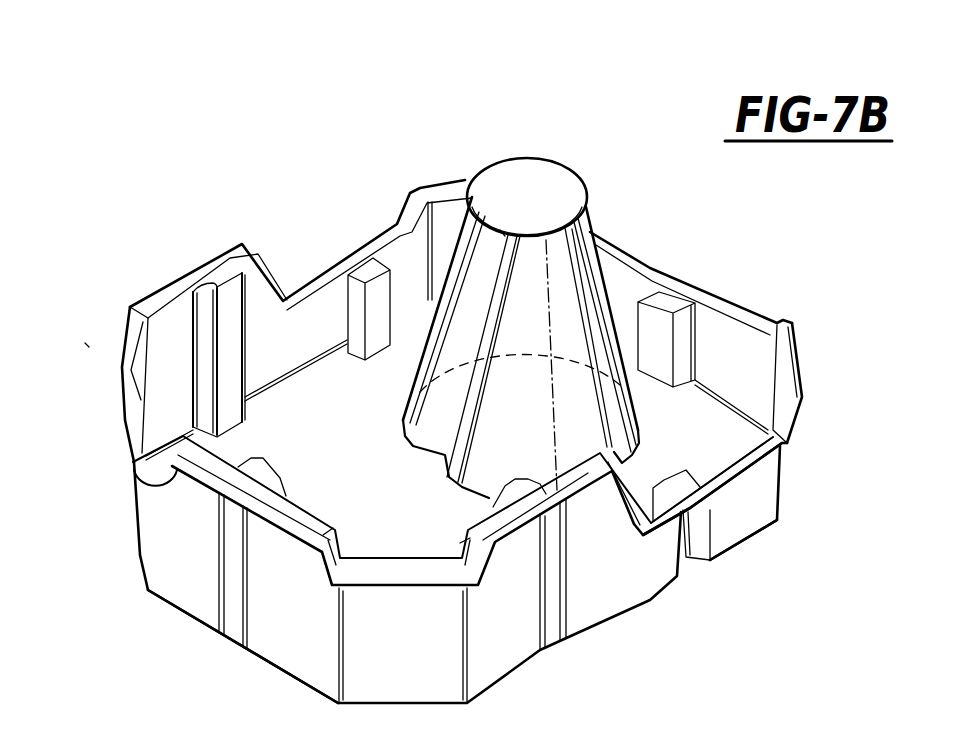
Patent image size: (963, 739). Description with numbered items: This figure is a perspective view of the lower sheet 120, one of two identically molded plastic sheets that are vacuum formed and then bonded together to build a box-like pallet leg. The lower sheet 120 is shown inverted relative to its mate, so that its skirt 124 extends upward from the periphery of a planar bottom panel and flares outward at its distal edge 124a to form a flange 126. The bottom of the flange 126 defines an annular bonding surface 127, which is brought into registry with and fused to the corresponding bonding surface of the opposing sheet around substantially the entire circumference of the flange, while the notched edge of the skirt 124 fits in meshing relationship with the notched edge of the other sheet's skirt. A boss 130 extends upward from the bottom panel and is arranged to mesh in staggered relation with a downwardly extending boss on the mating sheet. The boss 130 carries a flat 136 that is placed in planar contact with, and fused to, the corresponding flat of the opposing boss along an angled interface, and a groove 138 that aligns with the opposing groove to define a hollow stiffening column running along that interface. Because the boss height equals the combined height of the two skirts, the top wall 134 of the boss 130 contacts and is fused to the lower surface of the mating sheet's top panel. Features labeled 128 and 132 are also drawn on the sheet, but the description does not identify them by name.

The lower plastic sheet 120 is at (136, 580).
The skirt 124 is at (163, 495).
The distal edge 124a is at (140, 487).
The flange 126 is at (763, 467).
The annular bonding surface 127 is at (215, 283).
The rib 128 is at (232, 597).
The boss 130 is at (592, 190).
The block 132 is at (600, 293).
The top wall 134 is at (540, 172).
The flat 136 is at (447, 262).
The groove 138 is at (505, 222).